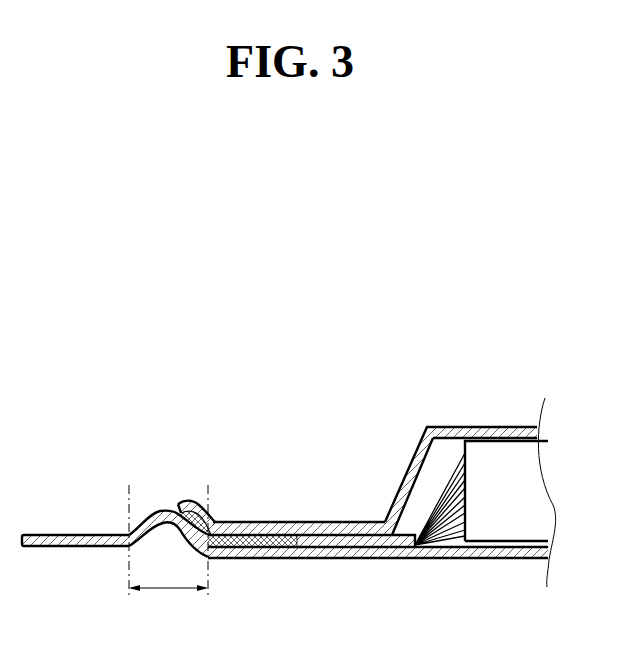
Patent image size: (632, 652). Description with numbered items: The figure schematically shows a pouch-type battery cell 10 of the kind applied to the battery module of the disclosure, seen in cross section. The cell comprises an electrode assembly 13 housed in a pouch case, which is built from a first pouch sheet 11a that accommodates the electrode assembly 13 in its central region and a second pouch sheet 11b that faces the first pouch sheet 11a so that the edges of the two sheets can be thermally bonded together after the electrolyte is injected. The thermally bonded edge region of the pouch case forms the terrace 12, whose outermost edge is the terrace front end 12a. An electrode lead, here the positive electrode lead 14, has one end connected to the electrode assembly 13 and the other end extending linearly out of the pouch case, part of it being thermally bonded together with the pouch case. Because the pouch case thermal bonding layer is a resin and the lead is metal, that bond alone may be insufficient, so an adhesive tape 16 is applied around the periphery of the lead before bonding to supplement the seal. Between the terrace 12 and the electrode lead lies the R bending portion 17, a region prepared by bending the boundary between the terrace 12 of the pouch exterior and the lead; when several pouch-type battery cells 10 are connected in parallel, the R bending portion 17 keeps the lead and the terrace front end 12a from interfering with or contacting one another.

The pouch-type battery cell 10 is at (276, 370).
The first pouch sheet 11a is at (445, 427).
The second pouch sheet 11b is at (443, 558).
The terrace 12 is at (268, 521).
The terrace front end 12a is at (177, 503).
The electrode assembly 13 is at (505, 463).
The positive electrode lead 14 is at (55, 534).
The adhesive tape 16 is at (260, 547).
The R bending portion 17 is at (168, 541).